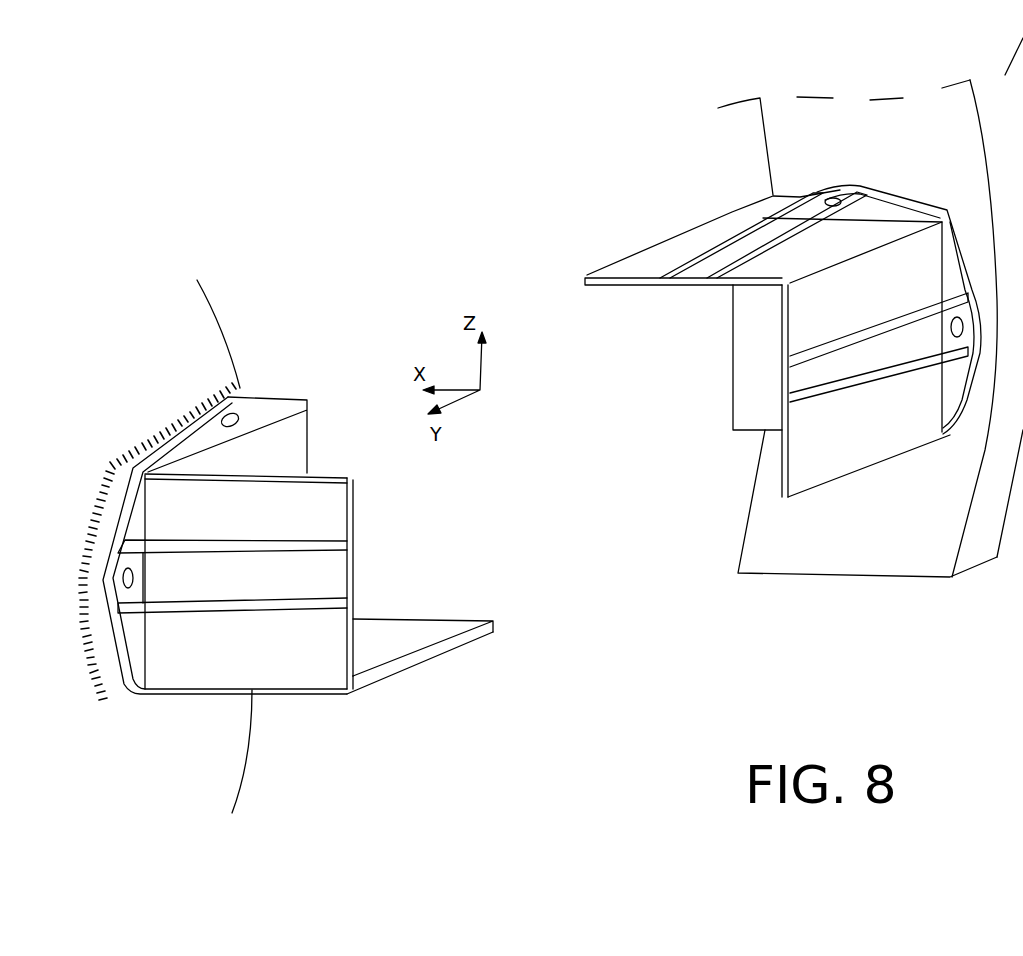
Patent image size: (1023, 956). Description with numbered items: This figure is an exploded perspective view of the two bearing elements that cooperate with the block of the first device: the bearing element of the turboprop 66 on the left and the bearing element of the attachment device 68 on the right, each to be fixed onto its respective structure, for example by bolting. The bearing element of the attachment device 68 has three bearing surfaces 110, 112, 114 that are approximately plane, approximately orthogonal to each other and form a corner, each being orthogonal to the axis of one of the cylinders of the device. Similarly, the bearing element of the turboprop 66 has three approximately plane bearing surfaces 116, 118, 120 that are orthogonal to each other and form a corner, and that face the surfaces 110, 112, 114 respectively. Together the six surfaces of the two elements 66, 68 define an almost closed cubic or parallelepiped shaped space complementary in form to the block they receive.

The bearing element of the turboprop 66 is at (203, 705).
The bearing element of the attachment device 68 is at (852, 172).
The bearing surface 110 is at (780, 462).
The bearing surface 112 is at (748, 310).
The bearing surface 114 is at (600, 290).
The bearing surface 116 is at (265, 443).
The bearing surface 118 is at (353, 645).
The bearing surface 120 is at (437, 632).